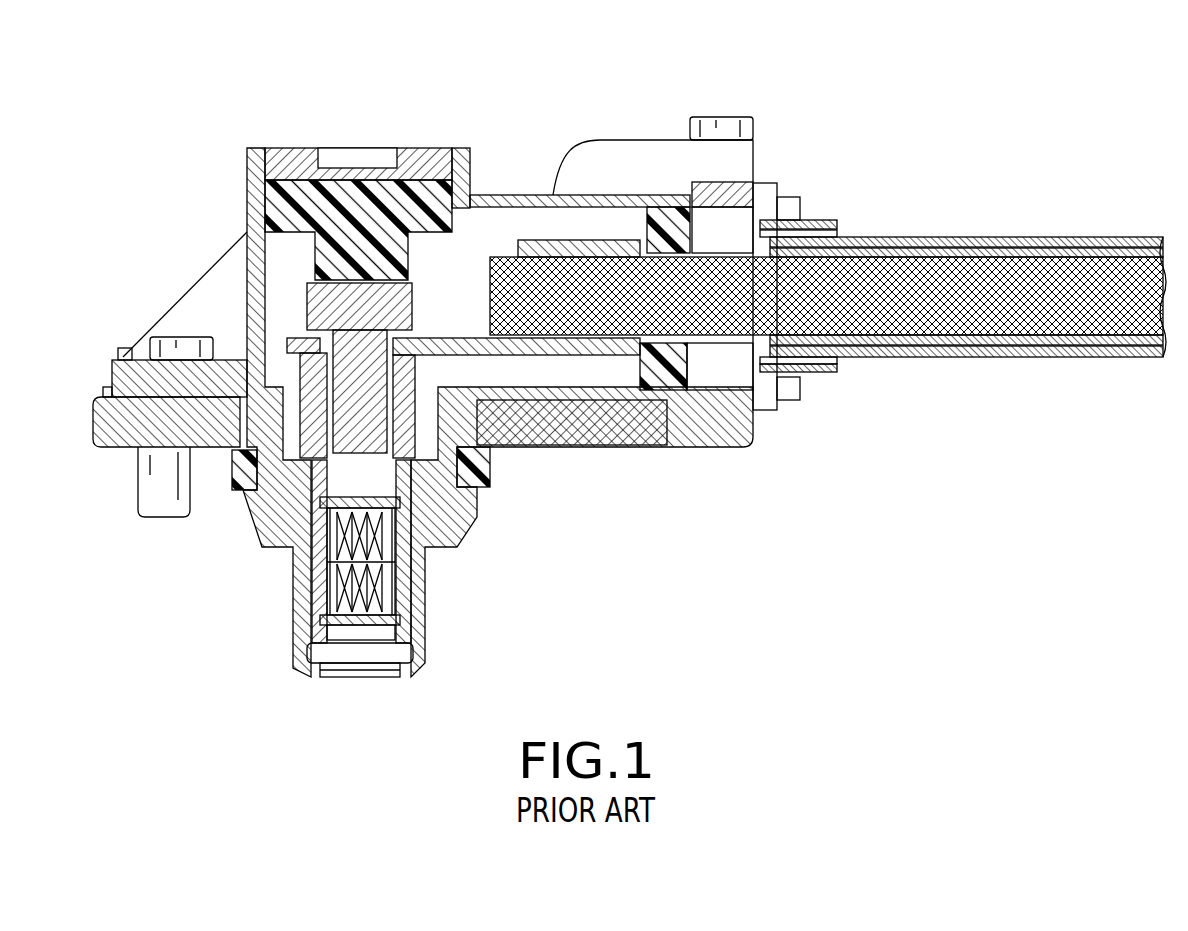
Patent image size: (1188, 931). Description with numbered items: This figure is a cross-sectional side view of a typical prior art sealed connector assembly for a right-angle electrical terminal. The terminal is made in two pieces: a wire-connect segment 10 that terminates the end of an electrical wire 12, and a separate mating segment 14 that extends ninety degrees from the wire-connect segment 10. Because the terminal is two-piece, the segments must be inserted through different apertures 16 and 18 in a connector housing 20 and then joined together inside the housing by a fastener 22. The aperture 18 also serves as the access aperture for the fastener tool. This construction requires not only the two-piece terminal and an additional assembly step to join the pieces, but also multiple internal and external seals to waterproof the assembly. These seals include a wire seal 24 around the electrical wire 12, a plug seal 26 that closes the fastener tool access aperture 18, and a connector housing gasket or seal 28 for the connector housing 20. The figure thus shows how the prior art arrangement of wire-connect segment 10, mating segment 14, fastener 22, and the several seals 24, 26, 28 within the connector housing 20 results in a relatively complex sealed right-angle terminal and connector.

The wire-connect segment 10 is at (583, 247).
The electrical wire 12 is at (1032, 237).
The mating segment 14 is at (400, 573).
The aperture 16 is at (698, 230).
The aperture 18 is at (263, 150).
The connector housing 20 is at (232, 372).
The fastener 22 is at (388, 303).
The wire seal 24 is at (655, 400).
The plug seal 26 is at (380, 187).
The connector housing gasket or seal 28 is at (483, 473).